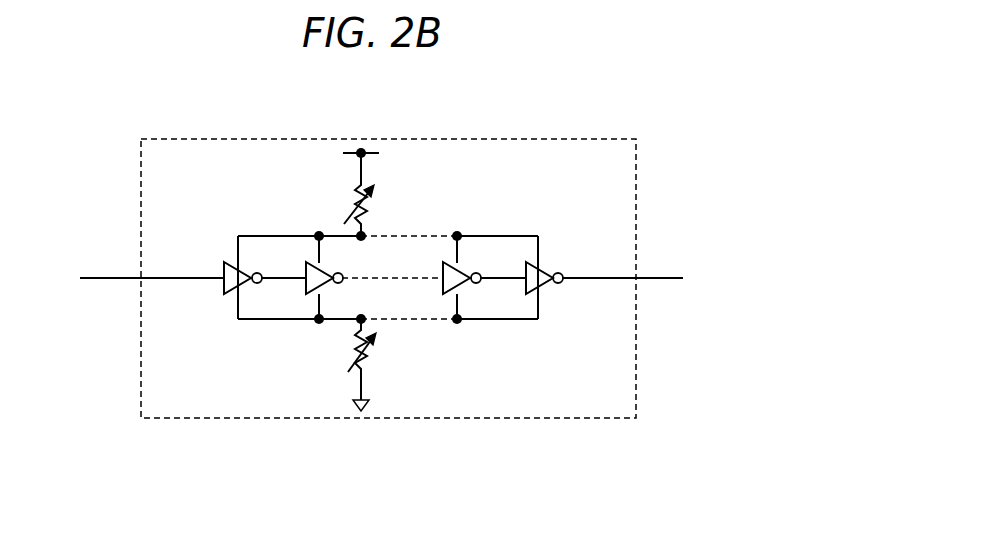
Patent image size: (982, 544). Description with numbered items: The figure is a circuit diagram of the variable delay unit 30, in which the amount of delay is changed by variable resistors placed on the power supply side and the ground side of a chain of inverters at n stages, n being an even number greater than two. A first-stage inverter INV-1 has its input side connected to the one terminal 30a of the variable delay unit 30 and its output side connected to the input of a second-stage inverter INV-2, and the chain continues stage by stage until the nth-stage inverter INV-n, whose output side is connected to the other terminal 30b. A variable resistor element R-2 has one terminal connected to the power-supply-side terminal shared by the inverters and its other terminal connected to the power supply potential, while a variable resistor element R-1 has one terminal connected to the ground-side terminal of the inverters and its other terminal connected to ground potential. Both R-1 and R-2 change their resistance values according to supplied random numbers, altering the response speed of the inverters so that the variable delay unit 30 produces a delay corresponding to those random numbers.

The variable delay unit 30 is at (586, 139).
The one terminal 30a is at (102, 268).
The other terminal 30b is at (656, 267).
The inverter at a first stage INV-1 is at (238, 286).
The inverter at a second stage INV-2 is at (311, 283).
The inverter at an nth stage INV-n is at (540, 285).
The variable resistor element on the ground side R-1 is at (376, 350).
The variable resistor element on the power supply side R-2 is at (373, 209).